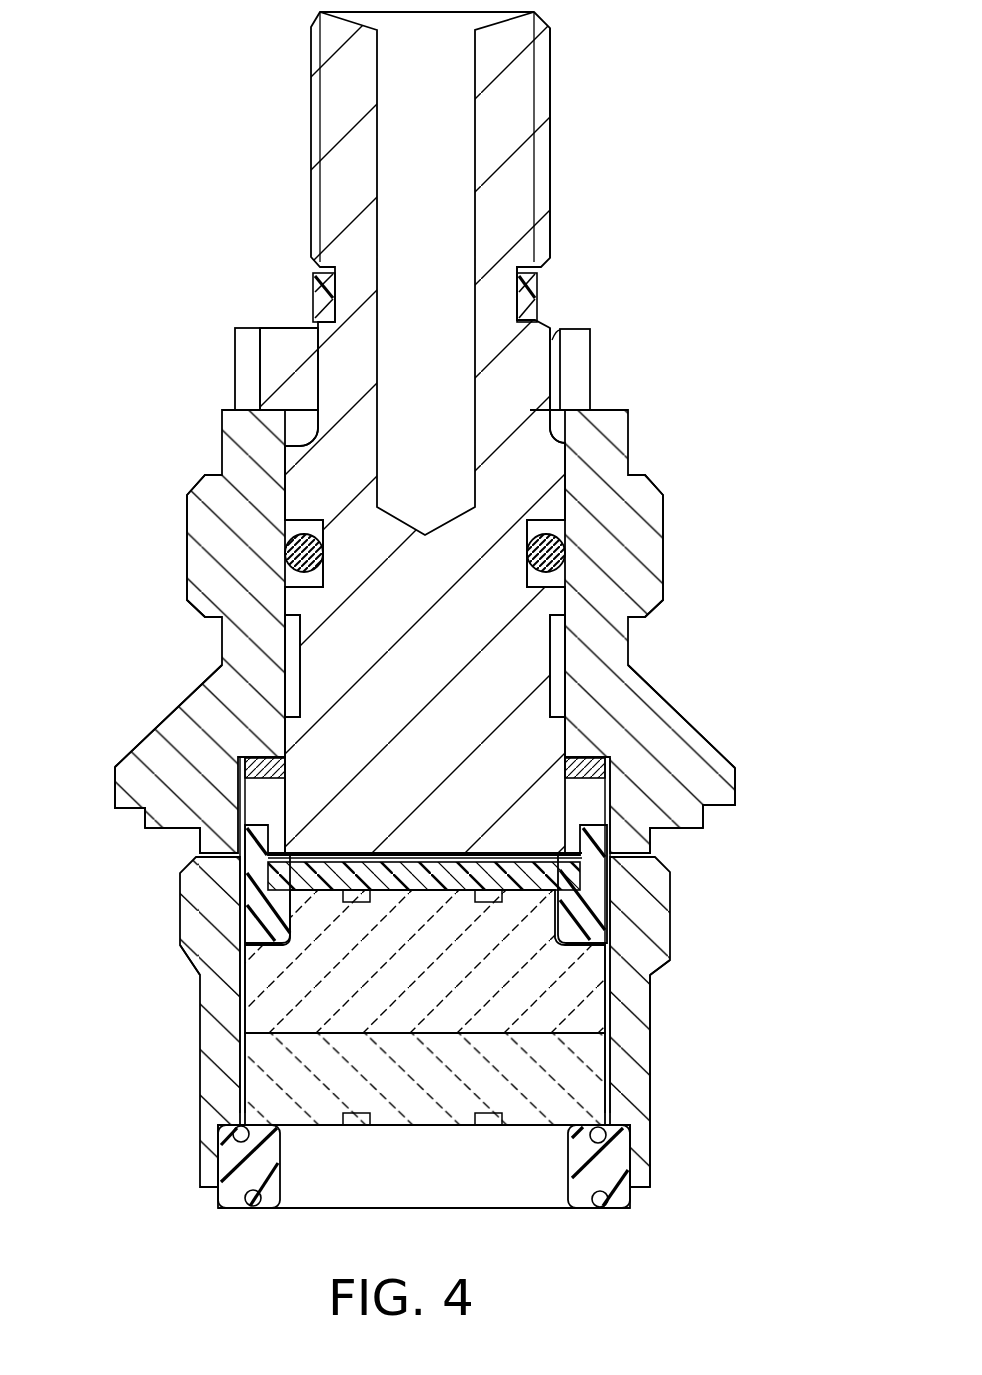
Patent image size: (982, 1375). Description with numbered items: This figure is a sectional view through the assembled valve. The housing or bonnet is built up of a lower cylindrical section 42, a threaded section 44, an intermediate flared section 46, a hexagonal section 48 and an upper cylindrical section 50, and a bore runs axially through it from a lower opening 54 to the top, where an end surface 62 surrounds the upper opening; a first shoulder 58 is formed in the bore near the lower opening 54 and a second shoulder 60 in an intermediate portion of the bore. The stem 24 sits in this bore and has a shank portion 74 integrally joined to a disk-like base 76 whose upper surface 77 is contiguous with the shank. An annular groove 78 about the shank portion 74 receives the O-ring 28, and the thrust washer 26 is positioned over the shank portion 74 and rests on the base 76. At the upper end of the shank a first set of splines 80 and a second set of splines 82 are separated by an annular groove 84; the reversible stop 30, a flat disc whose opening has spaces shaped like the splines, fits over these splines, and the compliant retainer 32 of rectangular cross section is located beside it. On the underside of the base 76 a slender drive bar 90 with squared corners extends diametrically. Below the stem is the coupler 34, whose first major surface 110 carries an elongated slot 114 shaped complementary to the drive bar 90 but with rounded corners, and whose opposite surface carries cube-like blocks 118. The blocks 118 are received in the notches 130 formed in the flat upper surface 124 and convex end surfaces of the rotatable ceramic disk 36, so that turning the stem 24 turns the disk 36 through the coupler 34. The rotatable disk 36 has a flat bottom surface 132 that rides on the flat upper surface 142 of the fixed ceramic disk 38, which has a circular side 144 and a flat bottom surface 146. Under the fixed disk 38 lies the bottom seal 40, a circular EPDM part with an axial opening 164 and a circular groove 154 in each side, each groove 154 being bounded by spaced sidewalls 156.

The stem 24 is at (553, 83).
The first set of splines 80 is at (552, 147).
The annular groove 84 is at (540, 282).
The retainer 32 is at (533, 295).
The second set of splines 82 is at (550, 336).
The reversible stop 30 is at (595, 357).
The end surface 62 is at (608, 410).
The upper cylindrical section 50 is at (628, 423).
The hexagonal section 48 is at (663, 510).
The O-ring 28 is at (555, 562).
The annular groove 78 is at (575, 570).
The shank portion 74 is at (560, 650).
The intermediate flared section 46 is at (650, 677).
The thrust washer 26 is at (660, 722).
The base 76 is at (585, 800).
The upper surface 77 is at (632, 826).
The drive bar 90 is at (600, 853).
The notches 130 is at (183, 953).
The threaded section 44 is at (670, 928).
The cube-like blocks 118 is at (262, 906).
The flat upper surface 142 is at (558, 1033).
The circular side 144 is at (605, 1067).
The lower cylindrical section 42 is at (652, 1093).
The sidewalls 156 is at (240, 1128).
The first shoulder 58 is at (222, 1160).
The lower opening 54 is at (600, 1193).
The circular groove 154 is at (233, 1132).
The fixed ceramic disk 38 is at (328, 1135).
The axial opening 164 is at (412, 1194).
The flat bottom surface 146 is at (447, 1140).
The second shoulder 60 is at (277, 789).
The elongated slot 114 is at (280, 840).
The first major surface 110 is at (132, 813).
The flat upper surface 124 is at (262, 874).
The coupler 34 is at (238, 880).
The rotatable ceramic disk 36 is at (240, 990).
The flat bottom surface 132 is at (252, 1036).
The bottom seal 40 is at (215, 1197).